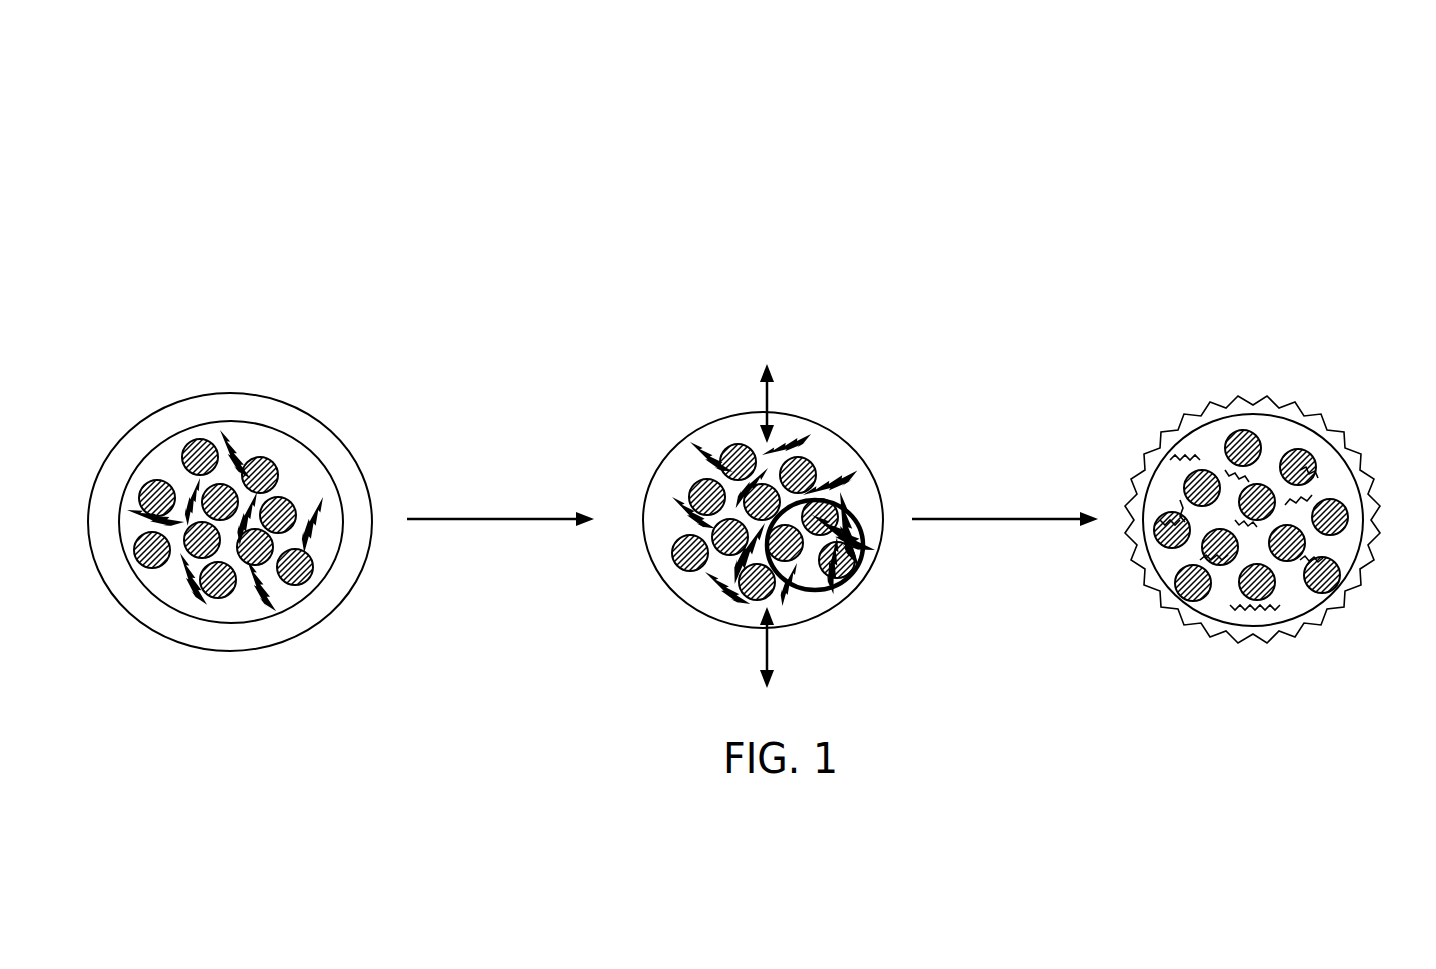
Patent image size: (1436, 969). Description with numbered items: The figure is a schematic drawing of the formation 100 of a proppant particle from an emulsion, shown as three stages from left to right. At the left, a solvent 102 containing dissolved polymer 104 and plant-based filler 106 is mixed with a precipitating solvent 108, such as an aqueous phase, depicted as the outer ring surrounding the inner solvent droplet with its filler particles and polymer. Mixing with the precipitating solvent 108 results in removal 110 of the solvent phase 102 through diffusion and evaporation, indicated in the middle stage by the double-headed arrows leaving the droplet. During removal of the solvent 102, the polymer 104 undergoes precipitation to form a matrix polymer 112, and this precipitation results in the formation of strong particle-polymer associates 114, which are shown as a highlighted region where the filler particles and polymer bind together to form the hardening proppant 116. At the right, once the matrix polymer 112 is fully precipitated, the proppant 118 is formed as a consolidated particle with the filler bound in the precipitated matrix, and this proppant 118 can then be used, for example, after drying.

The formation 100 is at (1292, 114).
The solvent 102 is at (267, 424).
The dissolved polymer 104 is at (318, 500).
The plant-based filler 106 is at (313, 560).
The precipitating solvent 108 is at (223, 392).
The removal 110 is at (764, 397).
The matrix polymer 112 is at (793, 446).
The particle-polymer associates 114 is at (856, 521).
The hardening proppant 116 is at (850, 445).
The proppant 118 is at (1327, 430).